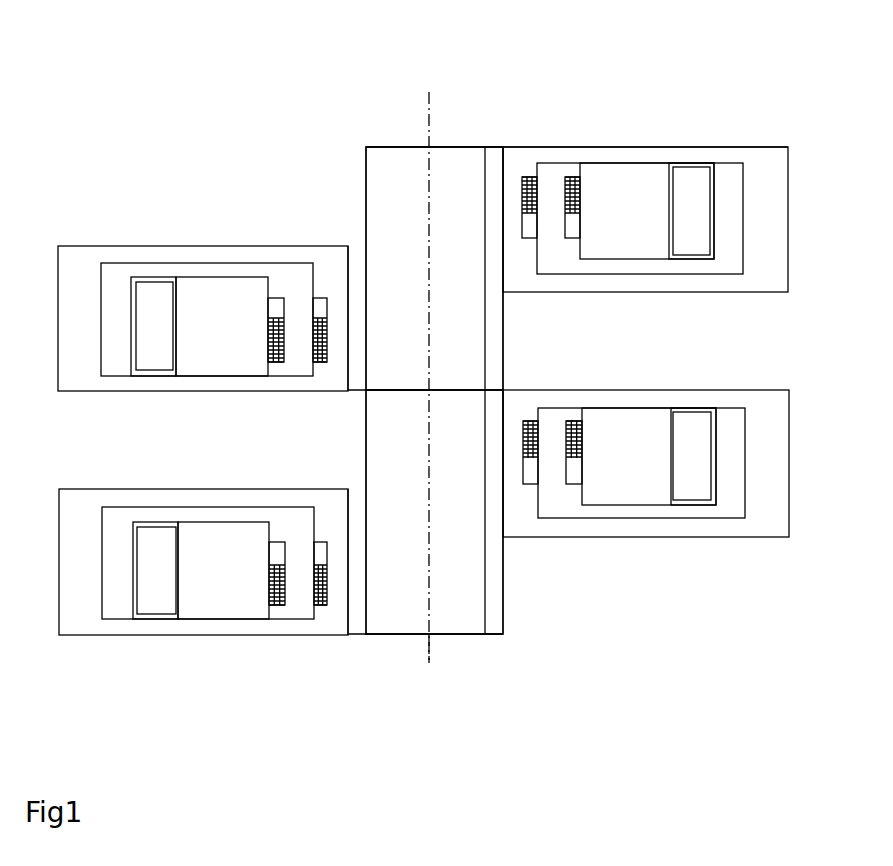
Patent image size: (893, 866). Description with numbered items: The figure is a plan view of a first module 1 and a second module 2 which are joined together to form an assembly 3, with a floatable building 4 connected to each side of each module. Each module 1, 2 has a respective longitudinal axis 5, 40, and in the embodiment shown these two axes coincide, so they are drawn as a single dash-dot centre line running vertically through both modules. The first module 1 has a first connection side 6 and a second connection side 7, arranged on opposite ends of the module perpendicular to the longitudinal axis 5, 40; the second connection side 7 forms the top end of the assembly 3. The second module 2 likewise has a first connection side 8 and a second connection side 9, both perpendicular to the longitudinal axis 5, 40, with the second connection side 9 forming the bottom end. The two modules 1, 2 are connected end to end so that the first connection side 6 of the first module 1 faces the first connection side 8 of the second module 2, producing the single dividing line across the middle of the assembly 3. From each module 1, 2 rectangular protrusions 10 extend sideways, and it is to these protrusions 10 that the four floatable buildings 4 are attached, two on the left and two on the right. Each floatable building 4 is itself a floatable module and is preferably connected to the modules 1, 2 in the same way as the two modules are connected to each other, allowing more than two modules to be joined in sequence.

The first module 1 is at (370, 215).
The second module 2 is at (465, 615).
The assembly 3 is at (349, 63).
The floatable building 4 is at (423, 391).
The longitudinal axis 5 is at (431, 117).
The first connection side 6 is at (450, 389).
The second connection side 7 is at (450, 147).
The first connection side 8 is at (392, 391).
The second connection side 9 is at (392, 635).
The rectangular protrusion 10 is at (356, 342).
The longitudinal axis 40 is at (429, 645).